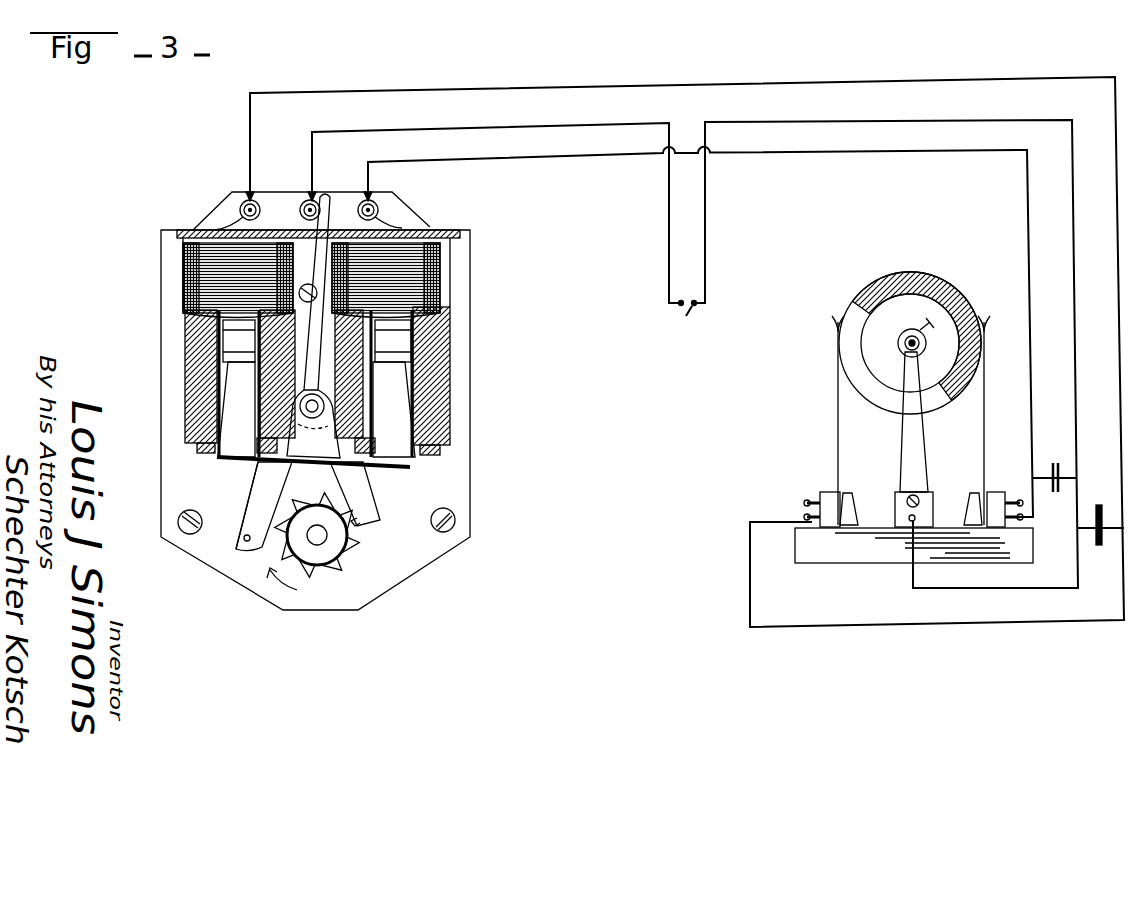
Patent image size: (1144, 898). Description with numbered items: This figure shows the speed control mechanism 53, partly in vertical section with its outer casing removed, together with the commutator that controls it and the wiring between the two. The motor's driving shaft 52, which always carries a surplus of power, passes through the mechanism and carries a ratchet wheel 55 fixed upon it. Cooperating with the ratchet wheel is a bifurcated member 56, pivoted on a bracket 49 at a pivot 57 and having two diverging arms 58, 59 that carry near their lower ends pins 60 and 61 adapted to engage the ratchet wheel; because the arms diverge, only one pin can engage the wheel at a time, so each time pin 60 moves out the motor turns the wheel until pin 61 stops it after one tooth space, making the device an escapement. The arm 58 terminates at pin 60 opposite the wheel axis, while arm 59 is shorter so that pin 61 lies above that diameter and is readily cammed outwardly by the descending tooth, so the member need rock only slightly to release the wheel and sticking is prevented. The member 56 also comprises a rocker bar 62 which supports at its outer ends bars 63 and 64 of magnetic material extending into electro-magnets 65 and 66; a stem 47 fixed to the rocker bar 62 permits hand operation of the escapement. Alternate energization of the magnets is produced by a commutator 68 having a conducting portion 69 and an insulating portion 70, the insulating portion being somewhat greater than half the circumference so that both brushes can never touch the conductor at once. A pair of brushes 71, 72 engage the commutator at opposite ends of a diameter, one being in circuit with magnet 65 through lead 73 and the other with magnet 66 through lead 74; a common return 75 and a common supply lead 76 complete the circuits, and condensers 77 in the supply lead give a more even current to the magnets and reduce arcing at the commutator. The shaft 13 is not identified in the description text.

The shaft 13 is at (903, 345).
The stem 47 is at (330, 198).
The bracket 49 is at (460, 494).
The driving shaft 52 is at (317, 532).
The speed control mechanism 53 is at (417, 560).
The ratchet wheel 55 is at (317, 563).
The bifurcated member 56 is at (257, 477).
The pivot 57 is at (322, 418).
The arm 58 is at (257, 508).
The arm 59 is at (360, 497).
The pin 60 is at (245, 541).
The pin 61 is at (358, 521).
The rocker bar 62 is at (413, 467).
The bar of magnetic material 63 is at (203, 447).
The bar of magnetic material 64 is at (395, 411).
The electro-magnet 65 is at (183, 370).
The electro-magnet 66 is at (433, 338).
The commutator 68 is at (913, 331).
The conducting portion 69 is at (868, 397).
The insulating portion 70 is at (922, 272).
The brush 71 is at (837, 443).
The brush 72 is at (985, 433).
The lead 73 is at (995, 625).
The lead 74 is at (933, 155).
The common return 75 is at (667, 228).
The common supply lead 76 is at (705, 240).
The condenser 77 is at (1053, 464).